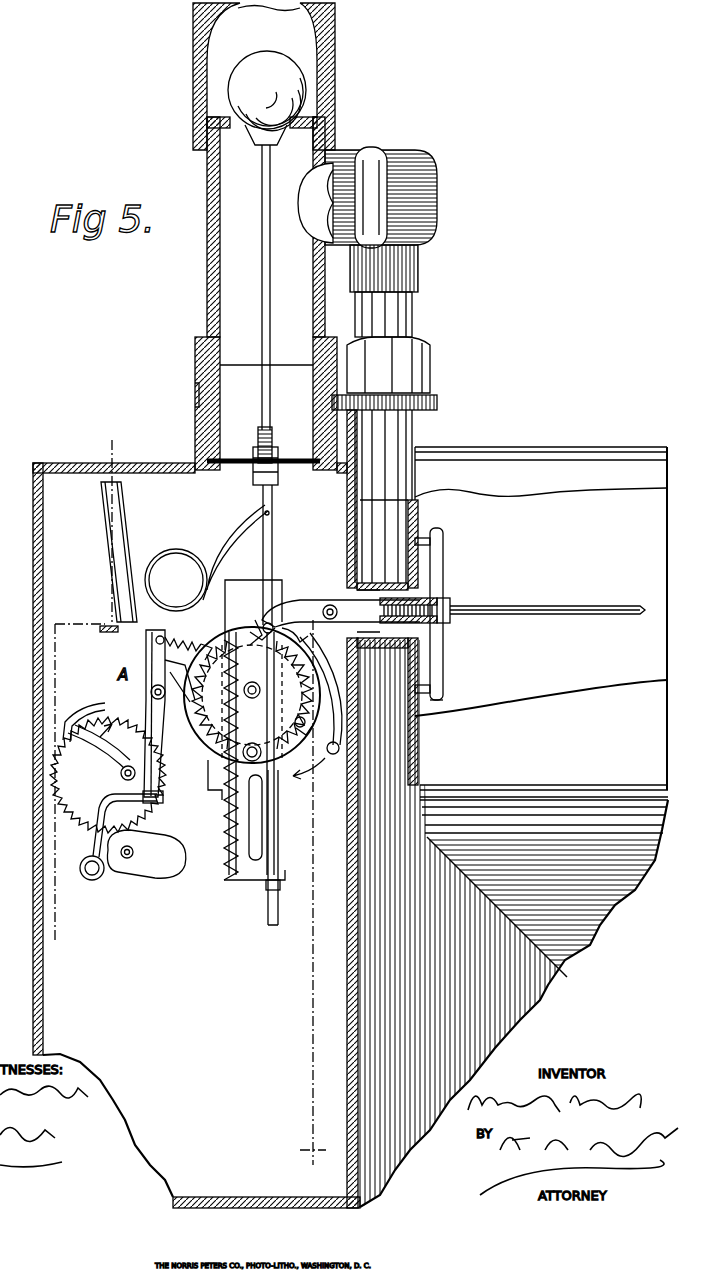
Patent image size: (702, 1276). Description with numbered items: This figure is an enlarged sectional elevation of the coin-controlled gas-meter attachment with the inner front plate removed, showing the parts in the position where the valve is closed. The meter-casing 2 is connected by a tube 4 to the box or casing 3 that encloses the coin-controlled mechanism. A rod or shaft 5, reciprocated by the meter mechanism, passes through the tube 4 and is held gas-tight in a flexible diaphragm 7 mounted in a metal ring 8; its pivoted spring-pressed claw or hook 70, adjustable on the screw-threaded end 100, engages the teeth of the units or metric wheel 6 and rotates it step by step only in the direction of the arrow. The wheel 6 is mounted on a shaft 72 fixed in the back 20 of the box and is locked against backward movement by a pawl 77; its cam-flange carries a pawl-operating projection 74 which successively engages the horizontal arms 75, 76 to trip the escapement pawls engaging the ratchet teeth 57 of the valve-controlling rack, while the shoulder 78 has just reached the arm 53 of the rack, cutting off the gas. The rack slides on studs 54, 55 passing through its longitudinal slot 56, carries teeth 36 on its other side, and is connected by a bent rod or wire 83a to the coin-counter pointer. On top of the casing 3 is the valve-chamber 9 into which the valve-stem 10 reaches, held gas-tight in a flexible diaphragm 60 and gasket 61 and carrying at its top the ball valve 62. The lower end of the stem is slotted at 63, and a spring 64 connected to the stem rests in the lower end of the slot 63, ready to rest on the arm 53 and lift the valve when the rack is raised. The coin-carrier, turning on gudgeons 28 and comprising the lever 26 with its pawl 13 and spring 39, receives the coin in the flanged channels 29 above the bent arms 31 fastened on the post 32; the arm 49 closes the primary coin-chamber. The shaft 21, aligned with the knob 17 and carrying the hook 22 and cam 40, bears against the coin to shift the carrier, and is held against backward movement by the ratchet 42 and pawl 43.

The meter-casing 2 is at (530, 828).
The box or casing 3 is at (350, 746).
The tube 4 is at (381, 615).
The rod or shaft 5 is at (512, 602).
The units or metric wheel 6 is at (252, 695).
The flexible diaphragm 7 is at (444, 590).
The metal ring 8 is at (443, 688).
The valve-chamber 9 is at (276, 76).
The valve-stem 10 is at (266, 290).
The pawl 13 is at (212, 800).
The knob 17 is at (288, 847).
The back 20 is at (130, 552).
The shaft 21 is at (121, 773).
The hook 22 is at (78, 722).
The lever 26 is at (180, 676).
The gudgeons 28 is at (151, 692).
The flanged channels 29 is at (161, 713).
The bent arms 31 is at (112, 797).
The post 32 is at (98, 876).
The teeth 36 is at (224, 872).
The spring 39 is at (178, 633).
The cam 40 is at (99, 744).
The ratchet 42 is at (84, 822).
The pawl 43 is at (146, 854).
The arm 49 is at (108, 622).
The arm 53 is at (272, 625).
The stud 54 is at (235, 620).
The stud 55 is at (310, 768).
The longitudinal slot 56 is at (262, 797).
The ratchet teeth 57 is at (299, 625).
The flexible diaphragm 60 is at (242, 458).
The gasket 61 is at (254, 403).
The valve 62 is at (267, 91).
The slot 63 is at (273, 563).
The spring 64 is at (206, 556).
The claw or hook 70 is at (341, 603).
The shaft 72 is at (252, 753).
The pawl-operating projection 74 is at (211, 637).
The horizontal arm 75 is at (305, 718).
The horizontal arm 76 is at (312, 729).
The pawl 77 is at (325, 674).
The shoulder 78 is at (258, 622).
The bent rod or wire 83a is at (287, 891).
The screw-threaded end 100 is at (443, 620).